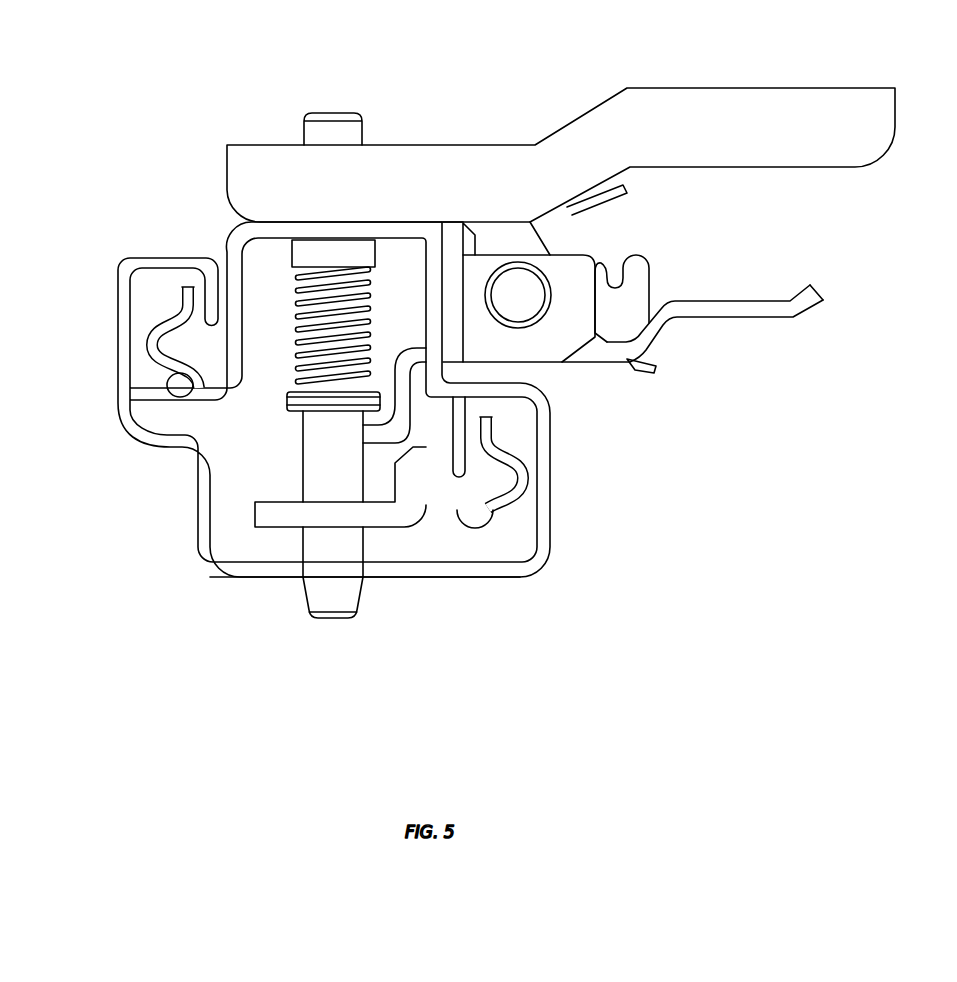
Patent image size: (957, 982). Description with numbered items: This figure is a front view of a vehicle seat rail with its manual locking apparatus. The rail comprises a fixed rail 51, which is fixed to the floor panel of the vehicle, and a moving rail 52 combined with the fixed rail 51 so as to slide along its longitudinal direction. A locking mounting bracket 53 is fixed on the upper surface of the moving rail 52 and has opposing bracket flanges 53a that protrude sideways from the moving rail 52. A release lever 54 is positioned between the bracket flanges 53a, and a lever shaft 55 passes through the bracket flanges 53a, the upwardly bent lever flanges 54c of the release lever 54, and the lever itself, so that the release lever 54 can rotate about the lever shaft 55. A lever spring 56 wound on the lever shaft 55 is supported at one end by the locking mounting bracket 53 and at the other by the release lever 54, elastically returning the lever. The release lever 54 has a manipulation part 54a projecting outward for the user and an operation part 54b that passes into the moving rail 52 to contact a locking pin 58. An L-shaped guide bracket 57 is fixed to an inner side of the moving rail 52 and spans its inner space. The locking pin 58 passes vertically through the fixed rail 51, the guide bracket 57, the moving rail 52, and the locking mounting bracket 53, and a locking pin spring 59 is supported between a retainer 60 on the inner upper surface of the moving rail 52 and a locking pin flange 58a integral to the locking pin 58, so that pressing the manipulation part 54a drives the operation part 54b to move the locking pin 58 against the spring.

The fixed rail 51 is at (253, 573).
The moving rail 52 is at (237, 245).
The locking mounting bracket 53 is at (765, 97).
The bracket flange 53a is at (640, 272).
The release lever 54 is at (634, 237).
The manipulation part 54a is at (780, 307).
The operation part 54b is at (380, 433).
The lever flange 54c is at (490, 238).
The lever shaft 55 is at (517, 293).
The lever spring 56 is at (648, 375).
The guide bracket 57 is at (405, 512).
The locking pin 58 is at (332, 607).
The locking pin flange 58a is at (290, 402).
The locking pin spring 59 is at (297, 313).
The retainer 60 is at (300, 253).